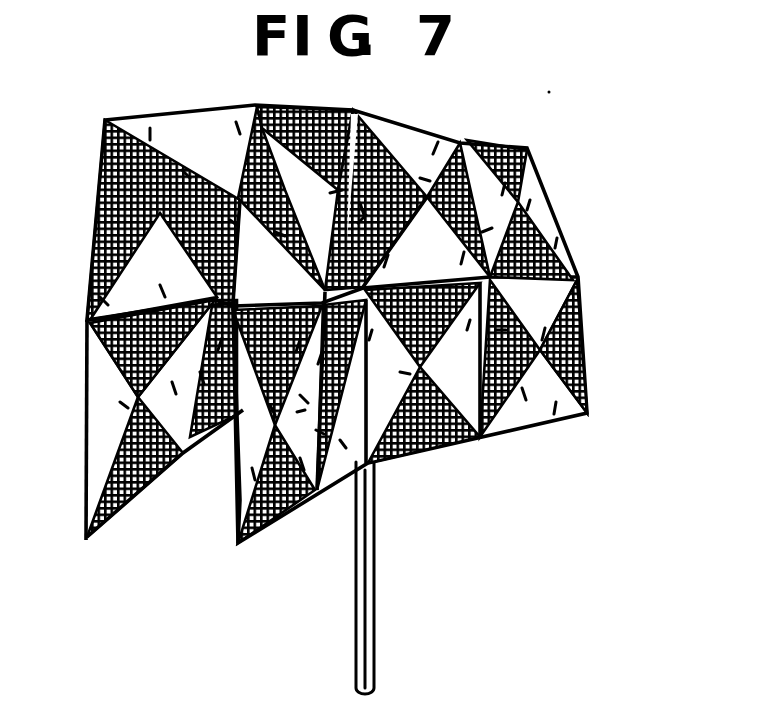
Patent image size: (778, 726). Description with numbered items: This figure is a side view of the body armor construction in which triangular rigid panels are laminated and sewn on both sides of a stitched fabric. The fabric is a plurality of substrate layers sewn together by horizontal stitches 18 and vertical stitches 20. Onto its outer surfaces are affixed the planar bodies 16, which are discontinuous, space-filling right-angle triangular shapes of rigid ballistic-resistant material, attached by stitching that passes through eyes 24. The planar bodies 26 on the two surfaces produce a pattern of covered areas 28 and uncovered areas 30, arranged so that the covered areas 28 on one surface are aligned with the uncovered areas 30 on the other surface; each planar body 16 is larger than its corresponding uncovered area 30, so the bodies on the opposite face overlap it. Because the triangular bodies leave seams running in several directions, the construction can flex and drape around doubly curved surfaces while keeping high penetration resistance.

The planar body 16 is at (535, 413).
The horizontal stitches 18 is at (400, 458).
The vertical stitches 20 is at (455, 450).
The eyes 24 is at (100, 477).
The planar bodies 26 is at (116, 395).
The covered areas 28 is at (537, 203).
The uncovered areas 30 is at (583, 356).